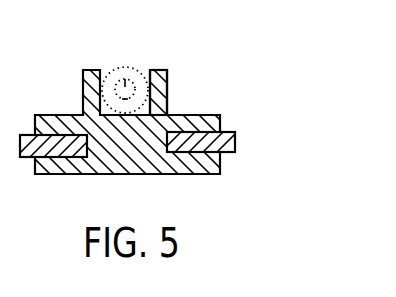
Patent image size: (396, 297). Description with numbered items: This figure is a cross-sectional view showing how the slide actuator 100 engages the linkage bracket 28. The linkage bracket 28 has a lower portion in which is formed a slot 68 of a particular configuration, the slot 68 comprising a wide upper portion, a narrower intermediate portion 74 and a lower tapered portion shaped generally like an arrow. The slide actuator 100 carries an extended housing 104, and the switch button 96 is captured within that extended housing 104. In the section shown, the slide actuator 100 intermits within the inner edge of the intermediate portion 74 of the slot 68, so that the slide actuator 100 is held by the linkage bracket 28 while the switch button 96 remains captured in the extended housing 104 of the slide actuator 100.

The slide actuator 100 is at (187, 175).
The extended housing 104 is at (168, 85).
The intermediate portion 74 is at (98, 146).
The linkage bracket 28 is at (233, 138).
The slot 68 is at (108, 84).
The switch button 96 is at (133, 74).